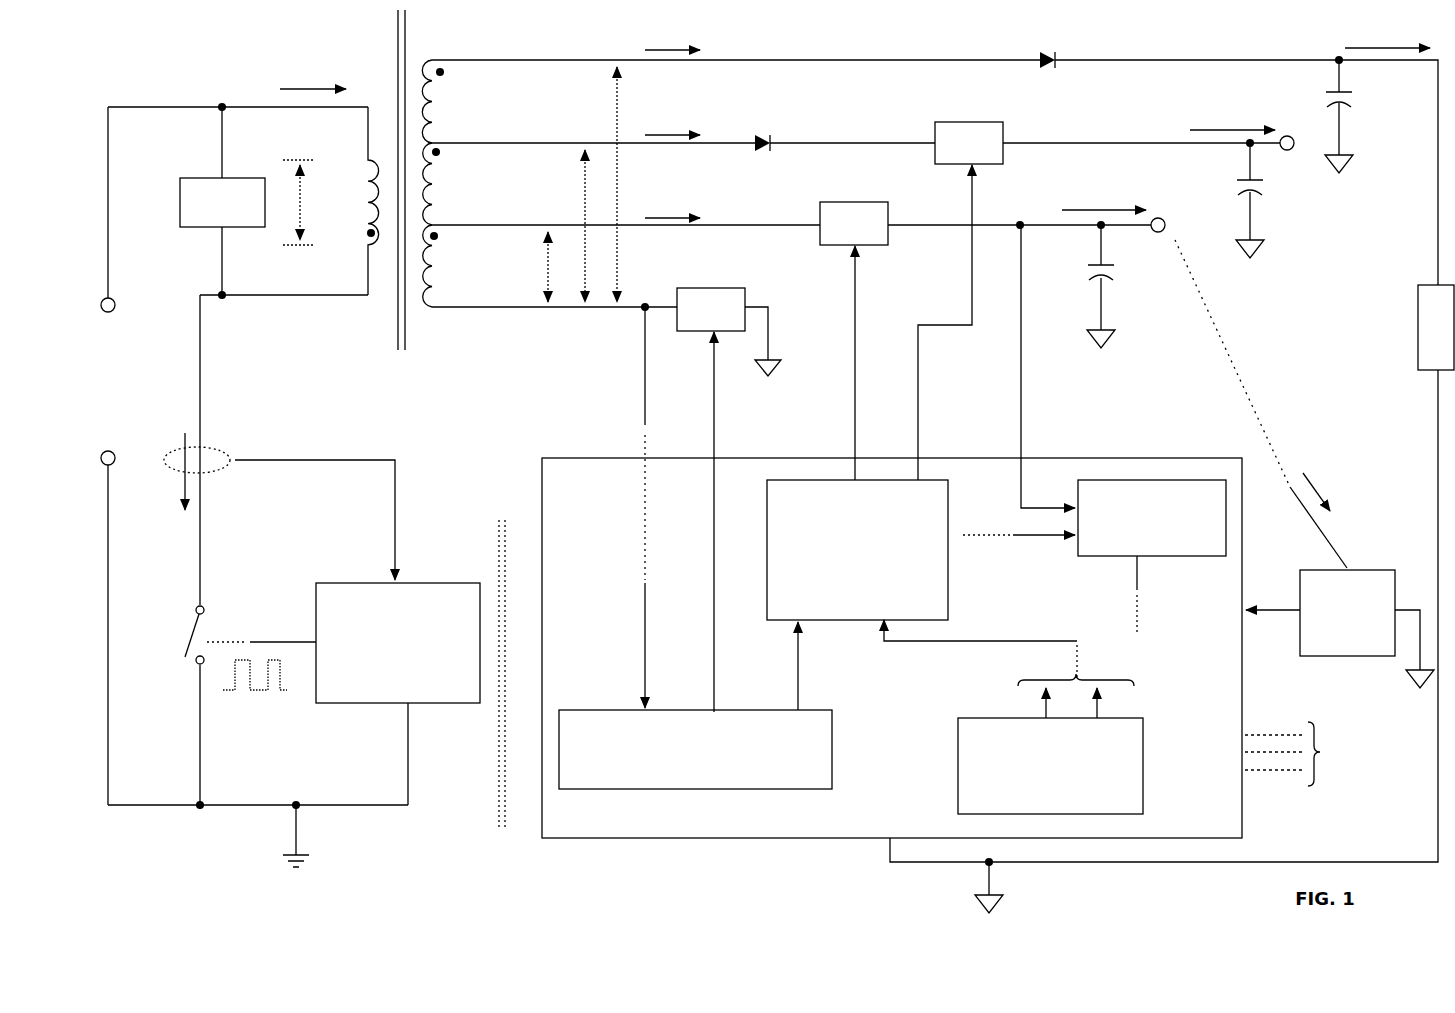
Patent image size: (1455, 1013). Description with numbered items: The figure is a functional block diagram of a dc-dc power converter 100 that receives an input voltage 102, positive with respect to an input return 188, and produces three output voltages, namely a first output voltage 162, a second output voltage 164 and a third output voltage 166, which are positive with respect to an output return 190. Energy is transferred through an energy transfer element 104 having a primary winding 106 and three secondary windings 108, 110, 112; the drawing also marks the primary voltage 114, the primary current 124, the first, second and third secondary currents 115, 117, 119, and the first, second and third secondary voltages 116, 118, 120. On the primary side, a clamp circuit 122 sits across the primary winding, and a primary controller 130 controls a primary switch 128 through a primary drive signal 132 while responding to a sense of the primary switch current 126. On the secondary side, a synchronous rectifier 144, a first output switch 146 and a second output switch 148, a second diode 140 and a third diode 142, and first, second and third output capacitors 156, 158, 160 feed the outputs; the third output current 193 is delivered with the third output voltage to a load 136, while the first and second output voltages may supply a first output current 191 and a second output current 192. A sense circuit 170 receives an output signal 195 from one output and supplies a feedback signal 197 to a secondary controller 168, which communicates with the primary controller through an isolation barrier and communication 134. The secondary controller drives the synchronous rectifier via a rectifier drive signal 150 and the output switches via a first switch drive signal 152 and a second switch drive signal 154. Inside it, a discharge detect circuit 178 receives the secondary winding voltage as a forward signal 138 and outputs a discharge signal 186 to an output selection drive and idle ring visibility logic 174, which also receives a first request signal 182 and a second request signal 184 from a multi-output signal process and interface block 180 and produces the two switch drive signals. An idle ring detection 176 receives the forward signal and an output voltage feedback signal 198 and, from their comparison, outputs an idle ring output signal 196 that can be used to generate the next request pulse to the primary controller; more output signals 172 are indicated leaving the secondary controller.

The power converter 100 is at (1240, 23).
The input voltage VIN 102 is at (111, 344).
The energy transfer element T1 104 is at (390, 26).
The primary winding 106 is at (348, 184).
The secondary winding 108 is at (468, 272).
The secondary winding 110 is at (468, 190).
The secondary winding 112 is at (470, 108).
The primary voltage VP 114 is at (310, 228).
The secondary current IS1 115 is at (692, 201).
The secondary voltage VS1 116 is at (532, 270).
The secondary current IS2 117 is at (692, 118).
The secondary voltage VS2 118 is at (554, 190).
The secondary current IS3 119 is at (682, 36).
The secondary voltage VS3 120 is at (632, 108).
The clamp circuit 122 is at (200, 176).
The primary current IP 124 is at (297, 46).
The primary switch current ID 126 is at (181, 403).
The switch S1 128 is at (173, 620).
The primary controller 130 is at (460, 575).
The primary drive signal 132 is at (286, 548).
The isolation barrier and communication 134 is at (492, 522).
The load 136 is at (1416, 318).
The signal FWD 138 is at (624, 352).
The diode D2 140 is at (780, 118).
The diode D3 142 is at (1085, 35).
The synchronous rectifier SR 144 is at (721, 270).
The output switch SW1 146 is at (849, 200).
The output switch SW2 148 is at (964, 120).
The drive signal DR_0 150 is at (690, 404).
The drive signal DR_1 152 is at (810, 292).
The drive signal DR_2 154 is at (923, 270).
The output capacitor C1 156 is at (1078, 286).
The output capacitor C2 158 is at (1208, 186).
The output capacitor C3 160 is at (1292, 92).
The output voltage VO1 162 is at (1142, 330).
The output voltage VO2 164 is at (1310, 210).
The output voltage VO3 166 is at (1398, 122).
The secondary controller 168 is at (802, 838).
The sense circuit 170 is at (1364, 570).
The more output signals 172 is at (1292, 724).
The output selection drive and idle ring visibility logic 174 is at (770, 622).
The idle ring detection 176 is at (1074, 498).
The discharge detect circuit 178 is at (602, 702).
The multi-output signal process and interface block 180 is at (950, 771).
The request signal REQ_1 182 is at (984, 688).
The request signal REQ_2 184 is at (1159, 688).
The DISCHARGE signal 186 is at (868, 696).
The input return 188 is at (280, 867).
The output return 190 is at (780, 373).
The output current IO1 191 is at (1086, 202).
The output current IO2 192 is at (408, 475).
The output current IO3 193 is at (1364, 36).
The output signal UO 195 is at (1347, 472).
The idle ring output signal 196 is at (1018, 608).
The feedback signal UFB 197 is at (1274, 583).
The VO1_FB signal 198 is at (1002, 407).